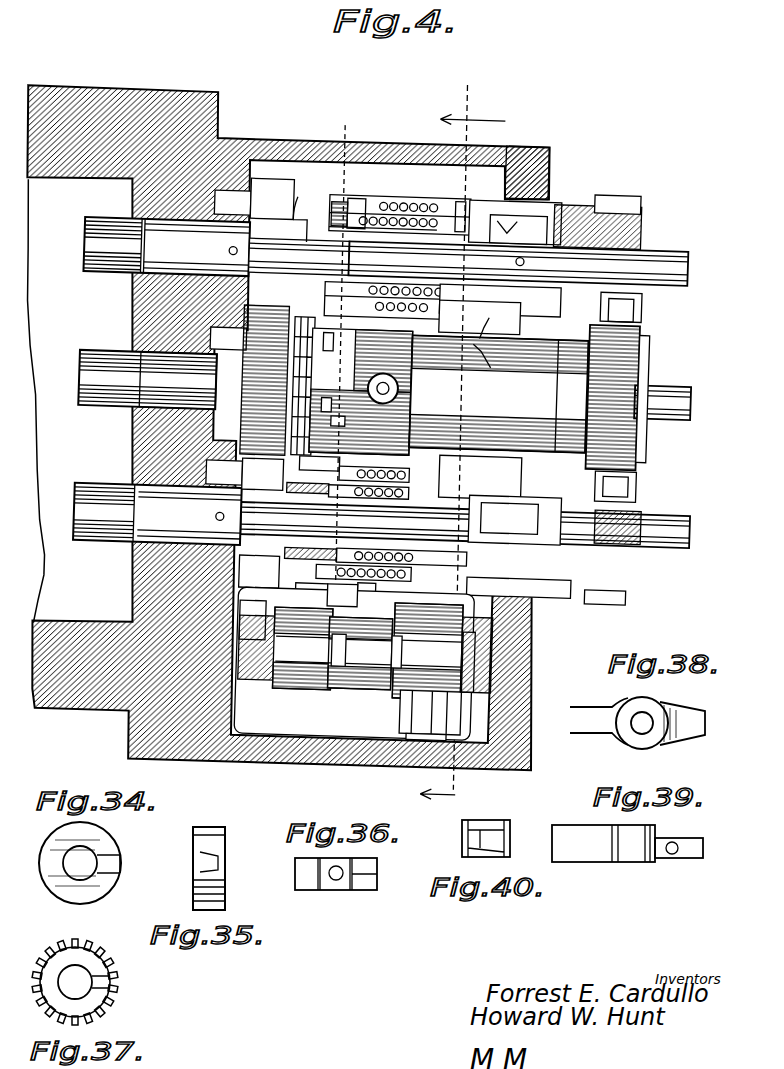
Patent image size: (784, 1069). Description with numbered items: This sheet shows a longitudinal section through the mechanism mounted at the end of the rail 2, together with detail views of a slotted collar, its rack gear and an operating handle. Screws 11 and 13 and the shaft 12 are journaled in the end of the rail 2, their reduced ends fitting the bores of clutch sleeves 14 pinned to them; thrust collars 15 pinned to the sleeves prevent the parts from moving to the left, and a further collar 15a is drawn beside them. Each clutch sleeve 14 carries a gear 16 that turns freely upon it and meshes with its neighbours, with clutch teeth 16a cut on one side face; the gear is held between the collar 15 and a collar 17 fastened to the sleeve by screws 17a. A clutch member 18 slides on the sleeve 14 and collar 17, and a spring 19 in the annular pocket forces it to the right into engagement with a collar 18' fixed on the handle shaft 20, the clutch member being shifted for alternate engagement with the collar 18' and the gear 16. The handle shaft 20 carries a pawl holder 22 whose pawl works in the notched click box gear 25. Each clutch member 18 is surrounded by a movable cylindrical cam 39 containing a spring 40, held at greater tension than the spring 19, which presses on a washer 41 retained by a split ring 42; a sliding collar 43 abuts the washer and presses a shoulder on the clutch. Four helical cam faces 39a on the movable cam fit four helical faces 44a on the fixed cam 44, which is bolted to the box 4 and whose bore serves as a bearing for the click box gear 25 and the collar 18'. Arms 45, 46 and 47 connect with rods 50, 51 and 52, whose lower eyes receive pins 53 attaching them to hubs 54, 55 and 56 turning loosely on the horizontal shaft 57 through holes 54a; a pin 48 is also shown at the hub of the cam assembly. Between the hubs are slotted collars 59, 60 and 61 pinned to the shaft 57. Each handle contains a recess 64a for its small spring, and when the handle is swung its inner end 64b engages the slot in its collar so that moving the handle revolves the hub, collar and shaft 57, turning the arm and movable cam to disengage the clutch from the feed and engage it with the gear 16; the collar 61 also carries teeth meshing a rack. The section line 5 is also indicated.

In FIG. 4, the rail 2 is at (190, 97).
In FIG. 4, the box 4 is at (545, 180).
In FIG. 4, the section line 5 is at (457, 433).
In FIG. 4, the screw 11 is at (166, 246).
In FIG. 4, the shaft 12 is at (147, 379).
In FIG. 4, the screw 13 is at (157, 514).
In FIG. 4, the clutch sleeve 14 is at (140, 230).
In FIG. 4, the thrust collar 15 is at (226, 208).
In FIG. 4, the bushing 15a is at (278, 391).
In FIG. 4, the gear 16 is at (262, 192).
In FIG. 4, the clutch teeth 16a is at (300, 205).
In FIG. 4, the collar 17 is at (299, 256).
In FIG. 4, the screw 17a is at (338, 355).
In FIG. 4, the clutch member 18 is at (538, 360).
In FIG. 4, the collar 18' is at (513, 375).
In FIG. 4, the spring 19 is at (459, 393).
In FIG. 4, the handle shaft 20 is at (662, 400).
In FIG. 4, the pawl holder 22 is at (636, 220).
In FIG. 4, the click box gear 25 is at (632, 195).
In FIG. 4, the movable cylindrical cam 39 is at (402, 203).
In FIG. 4, the helical cam faces 39a is at (462, 400).
In FIG. 4, the spring 40 is at (450, 202).
In FIG. 4, the washer 41 is at (352, 200).
In FIG. 4, the split ring 42 is at (334, 202).
In FIG. 4, the sliding collar 43 is at (349, 463).
In FIG. 4, the fixed cam 44 is at (484, 205).
In FIG. 4, the helical cam faces 44a is at (480, 347).
In FIG. 4, the arm 45 is at (334, 342).
In FIG. 4, the arm 46 is at (343, 422).
In FIG. 4, the arm 47 is at (329, 407).
In FIG. 4, the pin 48 is at (382, 374).
In FIG. 4, the rod 50 is at (275, 600).
In FIG. 4, the rod 51 is at (342, 595).
In FIG. 4, the connecting rod 52 is at (415, 736).
In FIG. 4, the pin 53 is at (430, 712).
In FIG. 4, the hub 54 is at (270, 686).
In FIG. 4, the hole 54a is at (478, 696).
In FIG. 4, the hub 55 is at (345, 690).
In FIG. 4, the hub 56 is at (405, 695).
In FIG. 4, the horizontal shaft 57 is at (498, 650).
In FIG. 4, the slotted collar 59 is at (302, 648).
In FIG. 34, the slotted collar 59 is at (104, 850).
In FIG. 35, the slotted collar 59 is at (226, 854).
In FIG. 36, the slotted collar 59 is at (308, 891).
In FIG. 4, the slotted collar 60 is at (359, 653).
In FIG. 4, the slotted collar 61 is at (550, 684).
In FIG. 37, the slotted collar 61 is at (98, 960).
In FIG. 38, the recess 64a is at (672, 738).
In FIG. 39, the recess 64a is at (676, 860).
In FIG. 38, the inner end of the handle 64b is at (705, 712).
In FIG. 39, the inner end of the handle 64b is at (700, 840).
In FIG. 40, the inner end of the handle 64b is at (510, 844).